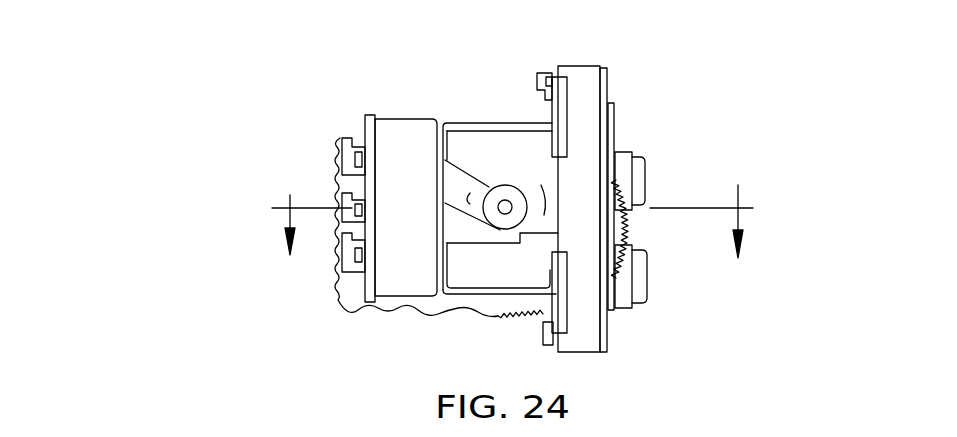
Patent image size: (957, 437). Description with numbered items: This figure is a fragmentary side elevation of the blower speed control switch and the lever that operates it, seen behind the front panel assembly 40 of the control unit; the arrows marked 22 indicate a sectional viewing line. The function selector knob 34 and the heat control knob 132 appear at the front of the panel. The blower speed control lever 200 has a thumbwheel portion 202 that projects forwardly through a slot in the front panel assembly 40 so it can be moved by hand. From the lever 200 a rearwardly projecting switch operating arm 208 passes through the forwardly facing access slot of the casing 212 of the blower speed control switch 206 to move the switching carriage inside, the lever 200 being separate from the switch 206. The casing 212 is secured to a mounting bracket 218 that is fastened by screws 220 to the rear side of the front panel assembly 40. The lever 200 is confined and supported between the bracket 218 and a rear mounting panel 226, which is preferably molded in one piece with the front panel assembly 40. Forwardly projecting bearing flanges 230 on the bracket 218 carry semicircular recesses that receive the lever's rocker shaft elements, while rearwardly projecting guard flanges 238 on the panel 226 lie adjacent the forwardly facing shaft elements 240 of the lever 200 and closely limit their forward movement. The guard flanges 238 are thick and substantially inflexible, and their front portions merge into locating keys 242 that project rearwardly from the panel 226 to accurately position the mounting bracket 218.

The section line 22- 22 is at (515, 235).
The manually operable knob 34 is at (528, 203).
The front panel assembly 40 is at (597, 353).
The heat control knob 132 is at (645, 298).
The blower speed control lever 200 is at (488, 247).
The thumbwheel portion 202 is at (628, 231).
The blower speed control switch 206 is at (401, 100).
The switch operating arm 208 is at (452, 216).
The casing 212 is at (393, 297).
The mounting bracket 218 is at (441, 300).
The screws 220 is at (545, 83).
The rear mounting panel 226 is at (549, 196).
The bearing flanges 230 is at (441, 122).
The guard flanges 238 is at (540, 316).
The shaft elements 240 is at (523, 190).
The locating keys 242 is at (500, 172).